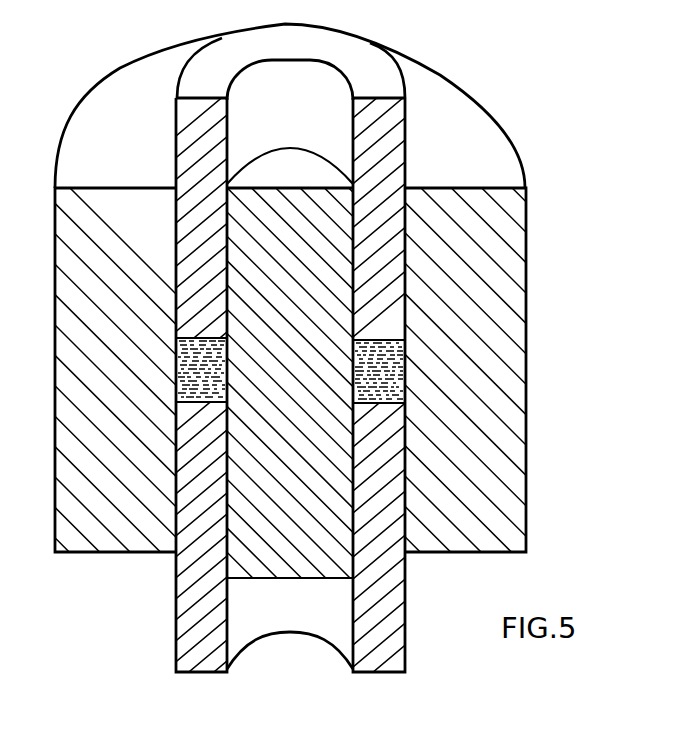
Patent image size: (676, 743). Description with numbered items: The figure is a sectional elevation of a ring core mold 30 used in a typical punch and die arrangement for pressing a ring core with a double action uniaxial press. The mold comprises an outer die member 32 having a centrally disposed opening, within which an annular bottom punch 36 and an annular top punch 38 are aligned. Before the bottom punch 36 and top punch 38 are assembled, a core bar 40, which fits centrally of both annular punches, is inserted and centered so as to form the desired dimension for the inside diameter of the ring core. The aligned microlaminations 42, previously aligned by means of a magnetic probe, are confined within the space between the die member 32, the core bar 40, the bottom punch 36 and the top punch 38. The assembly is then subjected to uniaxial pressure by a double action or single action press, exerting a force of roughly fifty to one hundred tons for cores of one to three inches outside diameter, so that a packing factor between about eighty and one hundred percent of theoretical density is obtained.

The ring core mold 30 is at (575, 290).
The outer die member 32 is at (515, 243).
The annular bottom punch 36 is at (385, 589).
The annular top punch 38 is at (396, 129).
The core bar 40 is at (298, 562).
The aligned microlaminations 42 is at (393, 370).